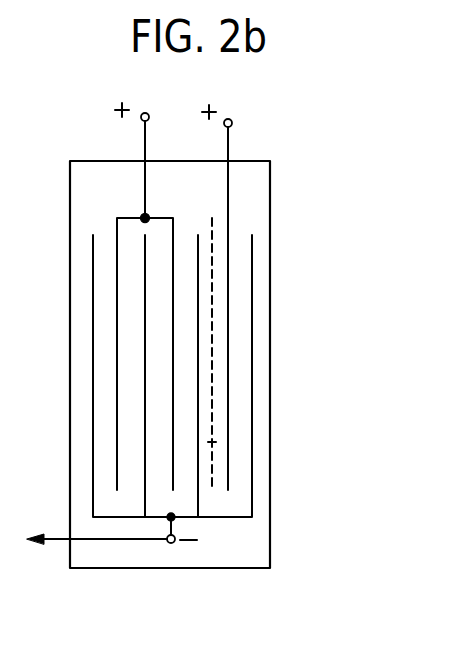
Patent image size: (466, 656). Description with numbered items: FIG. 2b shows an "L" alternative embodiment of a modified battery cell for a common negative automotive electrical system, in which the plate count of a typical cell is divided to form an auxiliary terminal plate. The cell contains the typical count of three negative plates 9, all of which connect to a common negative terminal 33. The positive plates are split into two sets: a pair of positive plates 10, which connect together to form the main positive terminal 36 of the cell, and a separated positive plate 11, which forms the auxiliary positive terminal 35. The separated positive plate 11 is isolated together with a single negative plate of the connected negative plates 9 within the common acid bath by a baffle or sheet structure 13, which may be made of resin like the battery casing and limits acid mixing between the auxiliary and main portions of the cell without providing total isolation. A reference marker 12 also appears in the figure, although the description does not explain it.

The negative plates 9 is at (144, 373).
The pair of positive plates 10 is at (175, 243).
The separated positive plate 11 is at (228, 173).
The grid electrode 12 is at (198, 278).
The baffle or sheet structure 13 is at (212, 442).
The common negative terminal 33 is at (171, 543).
The auxiliary positive terminal 35 is at (228, 119).
The main positive terminal 36 is at (145, 113).